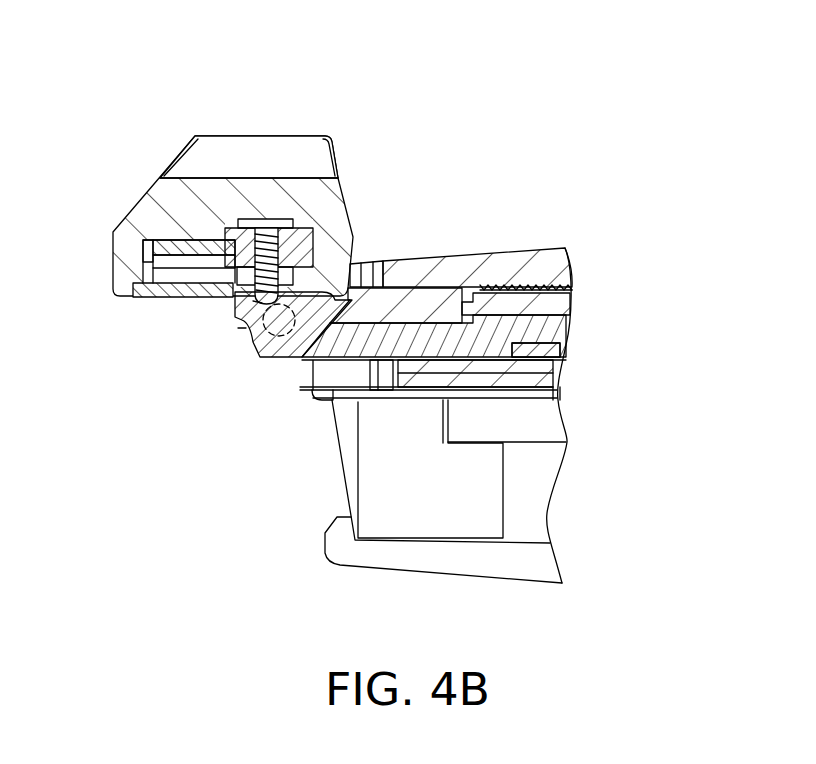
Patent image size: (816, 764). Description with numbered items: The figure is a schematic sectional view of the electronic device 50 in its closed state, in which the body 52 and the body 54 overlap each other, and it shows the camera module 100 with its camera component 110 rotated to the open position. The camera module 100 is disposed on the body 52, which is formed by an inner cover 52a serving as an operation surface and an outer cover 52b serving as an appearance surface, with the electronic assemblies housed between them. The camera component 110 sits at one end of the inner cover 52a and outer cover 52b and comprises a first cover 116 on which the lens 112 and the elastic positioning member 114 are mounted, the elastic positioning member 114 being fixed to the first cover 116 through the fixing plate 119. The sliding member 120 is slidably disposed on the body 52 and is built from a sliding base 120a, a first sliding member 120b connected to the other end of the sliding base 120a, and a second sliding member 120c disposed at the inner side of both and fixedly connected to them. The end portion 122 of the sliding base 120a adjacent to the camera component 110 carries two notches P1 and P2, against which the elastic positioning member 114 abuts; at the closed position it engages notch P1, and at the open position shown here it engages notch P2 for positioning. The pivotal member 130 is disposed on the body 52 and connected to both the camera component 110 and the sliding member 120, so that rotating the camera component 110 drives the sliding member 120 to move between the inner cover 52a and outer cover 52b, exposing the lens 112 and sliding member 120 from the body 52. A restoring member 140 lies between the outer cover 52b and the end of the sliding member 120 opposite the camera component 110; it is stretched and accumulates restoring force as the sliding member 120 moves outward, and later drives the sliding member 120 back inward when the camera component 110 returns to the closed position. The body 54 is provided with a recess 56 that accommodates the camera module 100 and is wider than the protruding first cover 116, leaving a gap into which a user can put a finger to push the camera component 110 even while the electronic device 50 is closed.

The camera module 100 is at (188, 95).
The camera component 110 is at (342, 145).
The lens 112 is at (150, 299).
The elastic positioning member 114 is at (265, 254).
The first cover 116 is at (180, 200).
The fixing plate 119 is at (157, 247).
The sliding member 120 is at (518, 143).
The sliding base 120a is at (430, 305).
The first sliding member 120b is at (543, 305).
The second sliding member 120c is at (492, 340).
The end portion 122 is at (262, 358).
The pivotal member 130 is at (284, 338).
The restoring member 140 is at (572, 289).
The electronic device 50 is at (726, 618).
The body 52 is at (618, 352).
The inner cover 52a is at (535, 397).
The outer cover 52b is at (572, 268).
The body 54 is at (405, 553).
The recess 56 is at (388, 489).
The notch P1 is at (244, 328).
The notch P2 is at (259, 301).